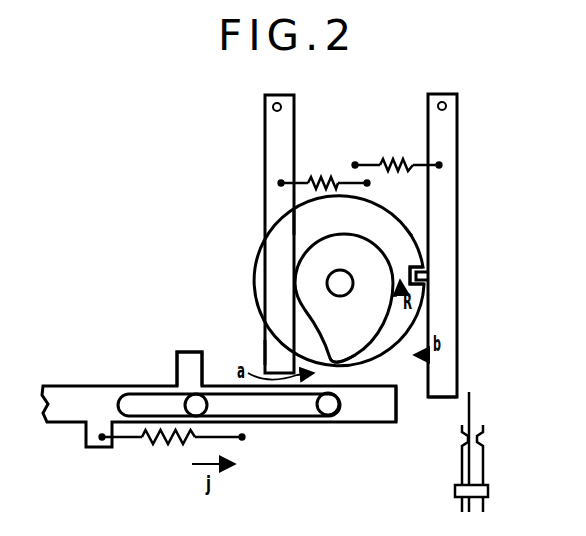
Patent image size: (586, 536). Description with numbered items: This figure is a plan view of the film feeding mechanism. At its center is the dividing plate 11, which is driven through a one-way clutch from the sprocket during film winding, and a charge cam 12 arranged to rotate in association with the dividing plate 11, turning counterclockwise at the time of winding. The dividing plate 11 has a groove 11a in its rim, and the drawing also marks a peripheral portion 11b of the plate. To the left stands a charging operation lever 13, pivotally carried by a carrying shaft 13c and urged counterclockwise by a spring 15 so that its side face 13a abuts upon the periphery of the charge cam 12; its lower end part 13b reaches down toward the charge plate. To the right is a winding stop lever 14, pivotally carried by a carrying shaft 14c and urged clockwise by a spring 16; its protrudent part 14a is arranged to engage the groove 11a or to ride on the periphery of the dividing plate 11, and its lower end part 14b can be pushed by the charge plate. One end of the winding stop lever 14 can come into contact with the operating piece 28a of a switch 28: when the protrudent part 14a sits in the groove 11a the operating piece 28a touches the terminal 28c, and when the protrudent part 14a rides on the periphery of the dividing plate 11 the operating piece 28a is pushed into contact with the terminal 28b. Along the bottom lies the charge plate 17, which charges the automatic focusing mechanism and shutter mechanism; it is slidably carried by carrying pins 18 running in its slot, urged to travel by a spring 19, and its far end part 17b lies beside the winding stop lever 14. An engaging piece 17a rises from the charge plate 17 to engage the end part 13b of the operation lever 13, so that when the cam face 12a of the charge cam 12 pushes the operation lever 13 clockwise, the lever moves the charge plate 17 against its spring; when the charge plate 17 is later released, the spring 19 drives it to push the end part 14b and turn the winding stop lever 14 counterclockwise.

The dividing plate 11 is at (377, 216).
The groove 11a is at (410, 268).
The peripheral portion of disc 11b is at (405, 227).
The charge cam 12 is at (385, 320).
The cam face 12a is at (353, 366).
The charging operation lever 13 is at (268, 203).
The side face 13a is at (294, 222).
The end part 13b is at (266, 352).
The carrying shaft 13c is at (273, 107).
The winding stop lever 14 is at (458, 243).
The protrudent part 14a is at (440, 277).
The end part 14b is at (428, 394).
The carrying shaft 14c is at (446, 105).
The spring 15 is at (318, 181).
The spring 16 is at (356, 163).
The charge plate 17 is at (91, 391).
The engaging piece 17a is at (203, 351).
The end of slide lever 17b is at (398, 411).
The carrying pins 18 is at (207, 406).
The spring 19 is at (128, 441).
The switch 28 is at (489, 492).
The operating piece 28a is at (471, 405).
The terminal 28b is at (485, 455).
The terminal 28c is at (461, 478).